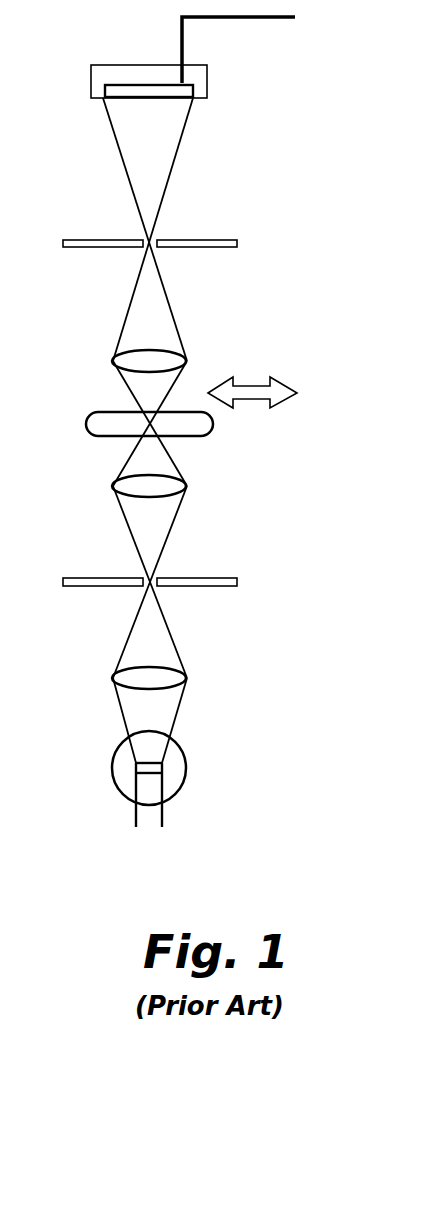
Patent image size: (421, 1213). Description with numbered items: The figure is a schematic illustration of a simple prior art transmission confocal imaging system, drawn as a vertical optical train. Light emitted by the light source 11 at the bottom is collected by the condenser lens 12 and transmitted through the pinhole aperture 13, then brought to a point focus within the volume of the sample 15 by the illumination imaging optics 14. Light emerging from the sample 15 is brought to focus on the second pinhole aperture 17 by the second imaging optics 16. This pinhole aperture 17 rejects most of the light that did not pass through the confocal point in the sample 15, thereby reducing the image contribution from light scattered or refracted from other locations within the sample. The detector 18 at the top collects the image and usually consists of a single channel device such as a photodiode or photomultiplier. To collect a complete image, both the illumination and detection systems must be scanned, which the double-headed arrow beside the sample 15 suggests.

The light source 11 is at (187, 768).
The condenser lens 12 is at (187, 678).
The pinhole aperture 13 is at (237, 582).
The illumination imaging optics 14 is at (187, 486).
The sample 15 is at (213, 424).
The second imaging optics 16 is at (187, 361).
The pinhole aperture 17 is at (237, 245).
The detector 18 is at (207, 80).